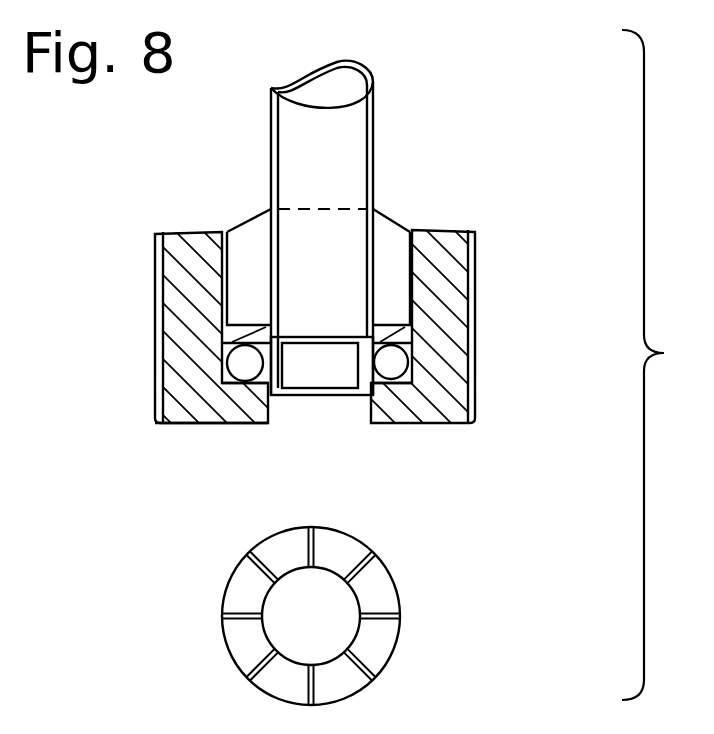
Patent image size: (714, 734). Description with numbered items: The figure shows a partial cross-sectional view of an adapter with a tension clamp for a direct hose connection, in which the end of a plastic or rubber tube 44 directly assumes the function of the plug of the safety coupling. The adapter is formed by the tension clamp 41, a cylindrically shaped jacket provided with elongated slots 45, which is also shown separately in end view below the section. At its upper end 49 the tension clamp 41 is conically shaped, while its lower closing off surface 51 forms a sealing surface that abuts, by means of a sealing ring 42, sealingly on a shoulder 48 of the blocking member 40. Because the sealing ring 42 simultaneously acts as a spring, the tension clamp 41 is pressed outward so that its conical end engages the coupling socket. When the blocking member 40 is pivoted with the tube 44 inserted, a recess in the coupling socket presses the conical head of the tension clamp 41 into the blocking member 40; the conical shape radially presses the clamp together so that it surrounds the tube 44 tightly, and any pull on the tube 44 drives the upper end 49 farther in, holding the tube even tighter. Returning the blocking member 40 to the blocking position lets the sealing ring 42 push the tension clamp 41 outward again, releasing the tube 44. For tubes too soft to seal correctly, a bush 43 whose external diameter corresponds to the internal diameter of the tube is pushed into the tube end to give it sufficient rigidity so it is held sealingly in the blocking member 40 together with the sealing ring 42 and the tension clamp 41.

The blocking member 40 is at (445, 365).
The tension clamp 41 is at (317, 427).
The sealing ring 42 is at (413, 420).
The bush 43 is at (337, 398).
The tube 44 is at (348, 132).
The elongated slots 45 is at (380, 617).
The shoulder 48 is at (232, 396).
The upper end 49 is at (247, 217).
The lower closing off surface 51 is at (224, 356).